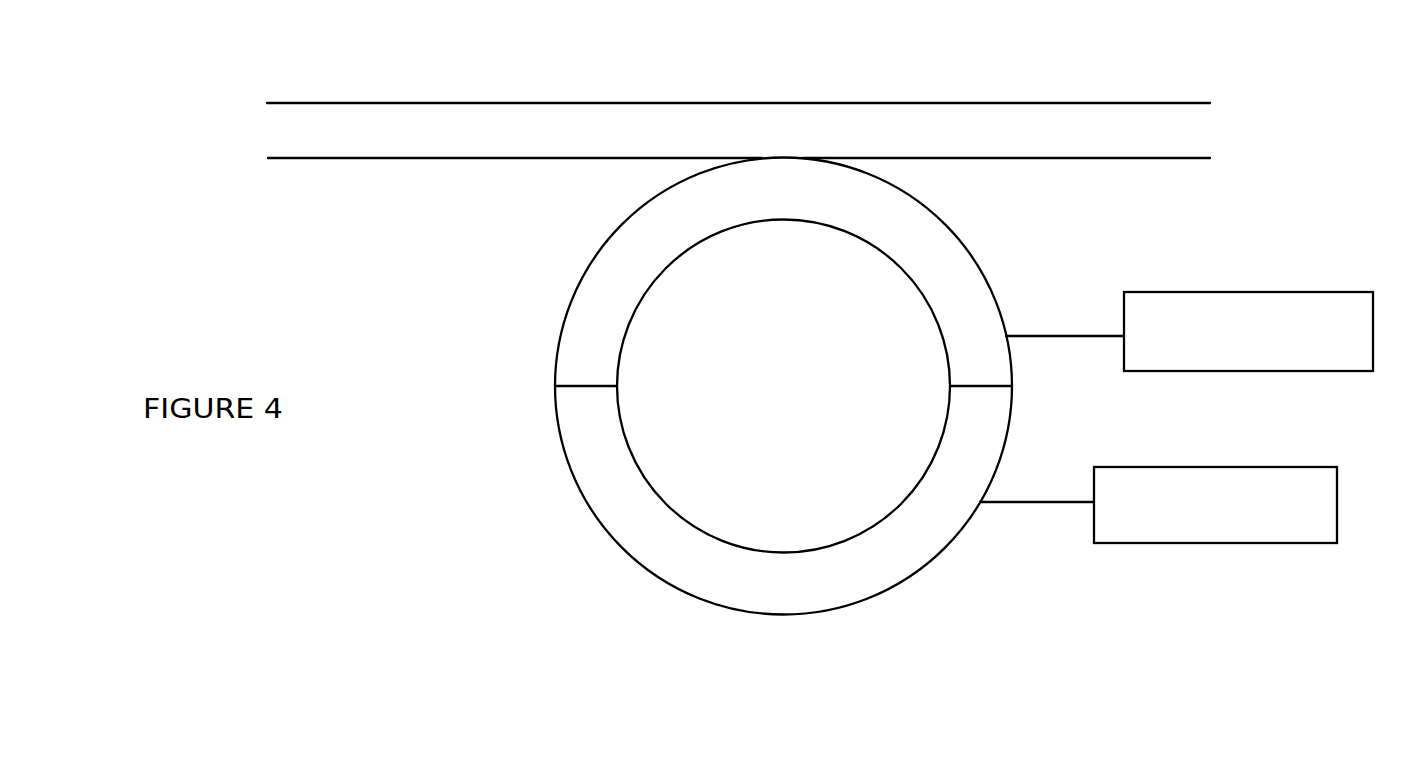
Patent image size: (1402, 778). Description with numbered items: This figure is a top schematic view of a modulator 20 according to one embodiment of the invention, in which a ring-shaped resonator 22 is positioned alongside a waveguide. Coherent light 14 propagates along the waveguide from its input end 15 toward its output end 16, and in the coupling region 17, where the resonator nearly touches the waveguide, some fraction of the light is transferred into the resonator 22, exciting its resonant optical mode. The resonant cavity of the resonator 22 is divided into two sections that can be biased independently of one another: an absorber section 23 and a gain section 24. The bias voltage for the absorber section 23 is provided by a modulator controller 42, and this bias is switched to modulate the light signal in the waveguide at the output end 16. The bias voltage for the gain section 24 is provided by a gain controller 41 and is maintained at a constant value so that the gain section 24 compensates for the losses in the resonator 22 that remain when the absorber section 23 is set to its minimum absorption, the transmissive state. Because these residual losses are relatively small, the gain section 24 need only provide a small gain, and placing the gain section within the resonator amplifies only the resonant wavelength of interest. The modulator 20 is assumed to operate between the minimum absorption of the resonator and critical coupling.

The modulator 20 is at (240, 83).
The coherent light 14 is at (413, 118).
The input end 15 is at (283, 158).
The output end 16 is at (1140, 158).
The coupling region 17 is at (782, 158).
The resonator 22 is at (993, 300).
The absorber section 23 is at (580, 295).
The gain section 24 is at (625, 527).
The gain controller 41 is at (1140, 543).
The modulator controller 42 is at (1352, 371).